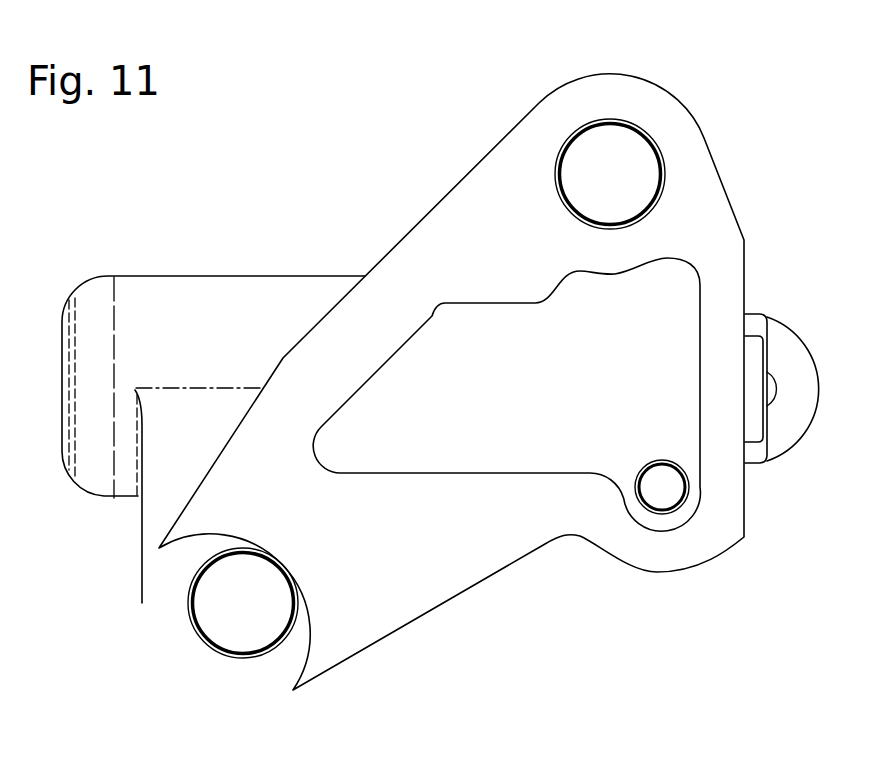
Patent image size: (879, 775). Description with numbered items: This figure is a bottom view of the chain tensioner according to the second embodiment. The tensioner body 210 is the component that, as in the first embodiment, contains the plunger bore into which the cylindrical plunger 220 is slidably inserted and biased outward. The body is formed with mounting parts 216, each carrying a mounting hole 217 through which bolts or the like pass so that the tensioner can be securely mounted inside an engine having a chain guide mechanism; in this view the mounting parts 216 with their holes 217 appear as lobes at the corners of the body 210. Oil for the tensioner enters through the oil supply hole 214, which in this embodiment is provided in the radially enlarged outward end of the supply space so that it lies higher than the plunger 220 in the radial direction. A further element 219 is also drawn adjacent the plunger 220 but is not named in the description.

The tensioner body 210 is at (253, 313).
The oil supply hole 214 is at (670, 500).
The mounting parts 216 is at (583, 103).
The mounting holes 217 is at (610, 175).
The roller 219 is at (795, 414).
The plunger 220 is at (755, 365).